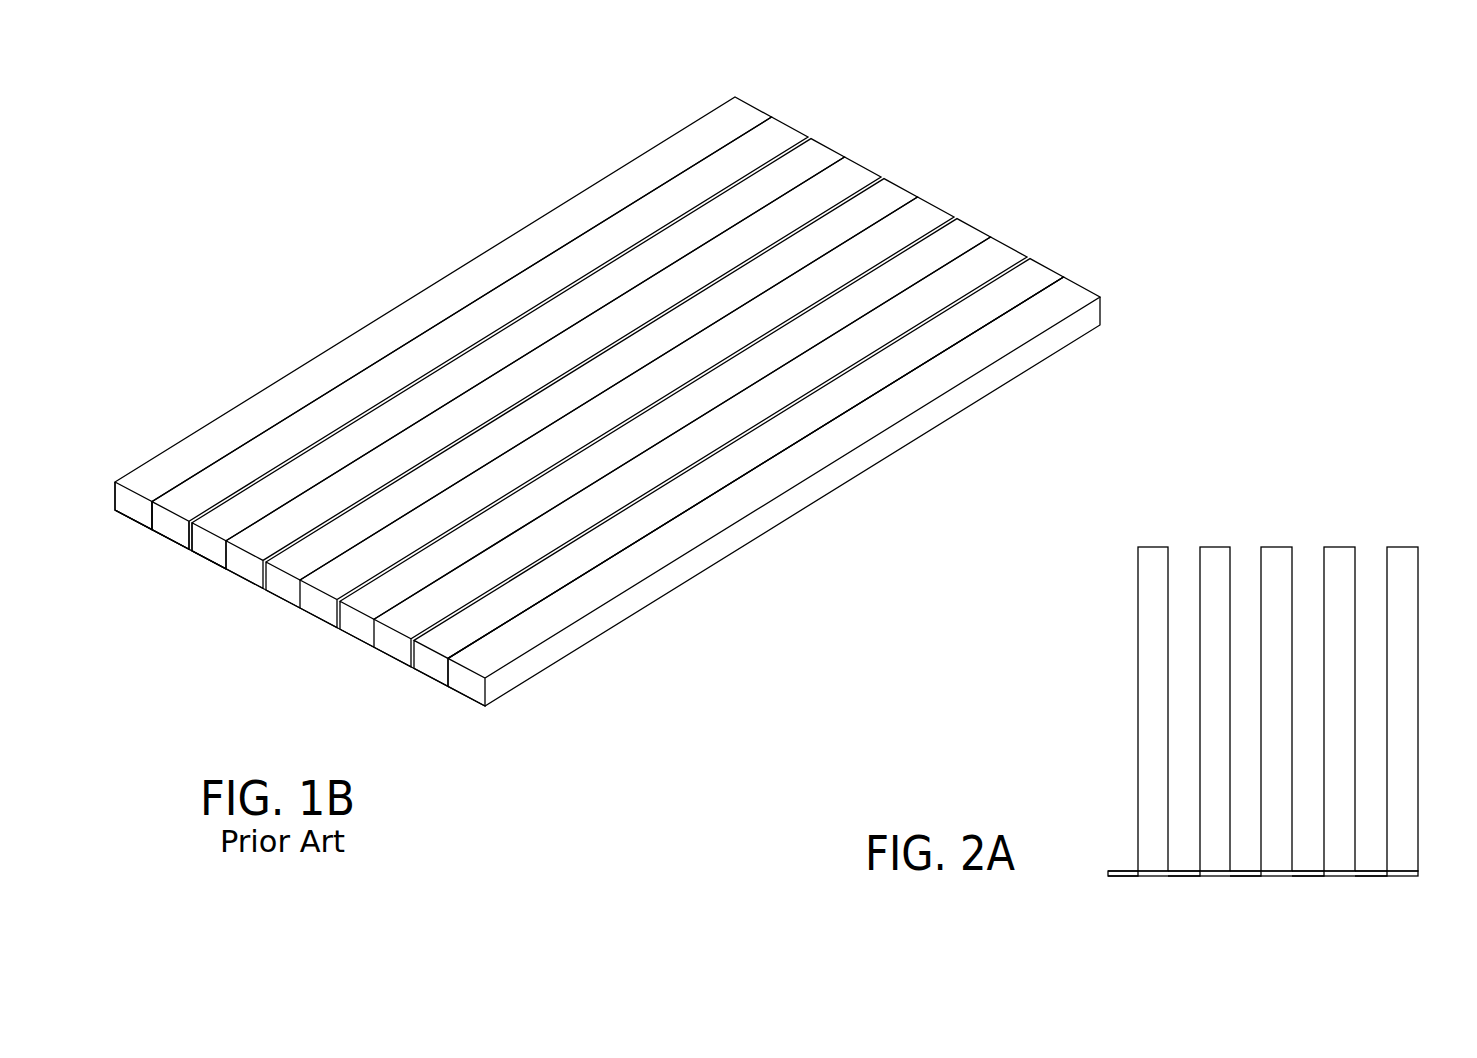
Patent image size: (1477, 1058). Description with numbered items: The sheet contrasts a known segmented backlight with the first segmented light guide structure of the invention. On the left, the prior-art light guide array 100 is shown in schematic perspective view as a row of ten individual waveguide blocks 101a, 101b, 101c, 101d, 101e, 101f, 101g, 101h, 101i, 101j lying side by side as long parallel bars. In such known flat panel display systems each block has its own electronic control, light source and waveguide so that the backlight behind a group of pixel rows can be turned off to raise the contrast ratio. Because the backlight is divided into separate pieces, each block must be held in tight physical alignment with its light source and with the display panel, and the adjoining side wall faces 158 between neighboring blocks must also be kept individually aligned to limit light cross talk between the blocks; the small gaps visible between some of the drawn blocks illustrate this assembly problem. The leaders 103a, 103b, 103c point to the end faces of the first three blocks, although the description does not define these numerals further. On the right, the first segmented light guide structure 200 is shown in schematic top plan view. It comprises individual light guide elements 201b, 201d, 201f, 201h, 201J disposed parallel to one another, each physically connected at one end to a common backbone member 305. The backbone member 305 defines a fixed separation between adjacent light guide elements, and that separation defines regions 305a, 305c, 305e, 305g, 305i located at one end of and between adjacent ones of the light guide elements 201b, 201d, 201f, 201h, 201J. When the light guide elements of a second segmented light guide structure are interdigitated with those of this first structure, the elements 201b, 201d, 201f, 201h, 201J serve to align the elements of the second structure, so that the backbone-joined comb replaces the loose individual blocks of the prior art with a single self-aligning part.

In FIG. 1B, the light guide element array 100 is at (405, 208).
In FIG. 1B, the block 101a is at (223, 457).
In FIG. 1B, the block 101b is at (273, 467).
In FIG. 1B, the block 101c is at (313, 488).
In FIG. 1B, the block 101d is at (365, 493).
In FIG. 1B, the block 101e is at (399, 521).
In FIG. 1B, the block 101f is at (451, 533).
In FIG. 1B, the block 101g is at (476, 558).
In FIG. 1B, the block 101h is at (532, 563).
In FIG. 1B, the block 101i is at (553, 588).
In FIG. 1B, the block 101j is at (601, 606).
In FIG. 1B, the slab end face 103a is at (150, 507).
In FIG. 1B, the slab end face 103b is at (178, 521).
In FIG. 1B, the slab end face 103c is at (217, 544).
In FIG. 1B, the adjoining side wall face 158 is at (448, 662).
In FIG. 2A, the first segmented light guide structure 200 is at (1197, 475).
In FIG. 2A, the light guide element 201b is at (1138, 578).
In FIG. 2A, the light guide element 201d is at (1200, 578).
In FIG. 2A, the light guide element 201f is at (1261, 580).
In FIG. 2A, the light guide element 201h is at (1324, 588).
In FIG. 2A, the light guide element 201J is at (1387, 578).
In FIG. 2A, the common backbone member 305 is at (1288, 875).
In FIG. 2A, the region 305a is at (1118, 877).
In FIG. 2A, the region 305c is at (1182, 877).
In FIG. 2A, the region 305e is at (1247, 877).
In FIG. 2A, the region 305g is at (1307, 878).
In FIG. 2A, the region 305i is at (1373, 878).